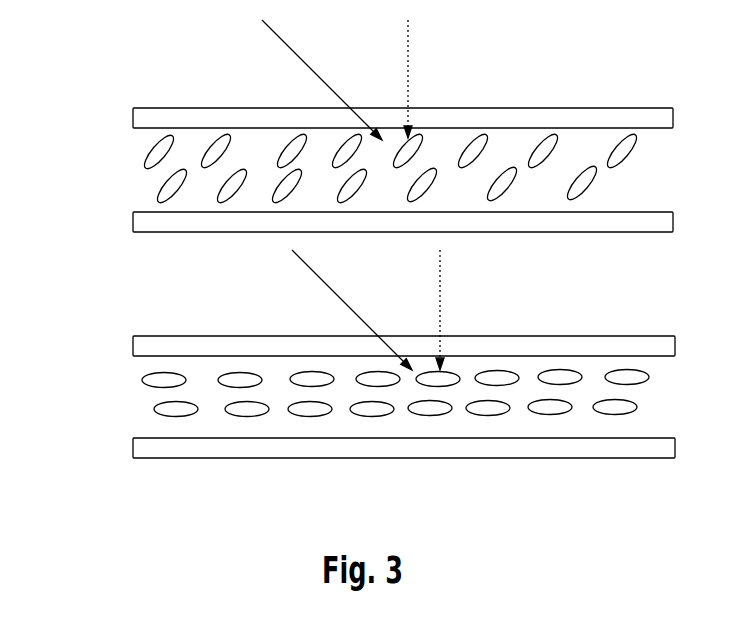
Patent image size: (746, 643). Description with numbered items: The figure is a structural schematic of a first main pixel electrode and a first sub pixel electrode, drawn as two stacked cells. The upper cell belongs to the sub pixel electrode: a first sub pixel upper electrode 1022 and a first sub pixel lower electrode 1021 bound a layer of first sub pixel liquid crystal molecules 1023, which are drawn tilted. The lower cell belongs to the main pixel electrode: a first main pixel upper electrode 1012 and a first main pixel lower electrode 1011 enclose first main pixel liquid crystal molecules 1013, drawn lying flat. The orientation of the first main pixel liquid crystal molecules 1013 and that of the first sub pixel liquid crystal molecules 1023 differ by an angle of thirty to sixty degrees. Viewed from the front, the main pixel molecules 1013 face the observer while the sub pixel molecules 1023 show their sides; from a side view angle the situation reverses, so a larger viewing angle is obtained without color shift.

The first main pixel lower electrode 1011 is at (132, 454).
The first main pixel upper electrode 1012 is at (132, 351).
The first main pixel liquid crystal molecules 1013 is at (145, 385).
The first sub pixel lower electrode 1021 is at (132, 226).
The first sub pixel upper electrode 1022 is at (132, 122).
The first sub pixel liquid crystal molecules 1023 is at (145, 168).